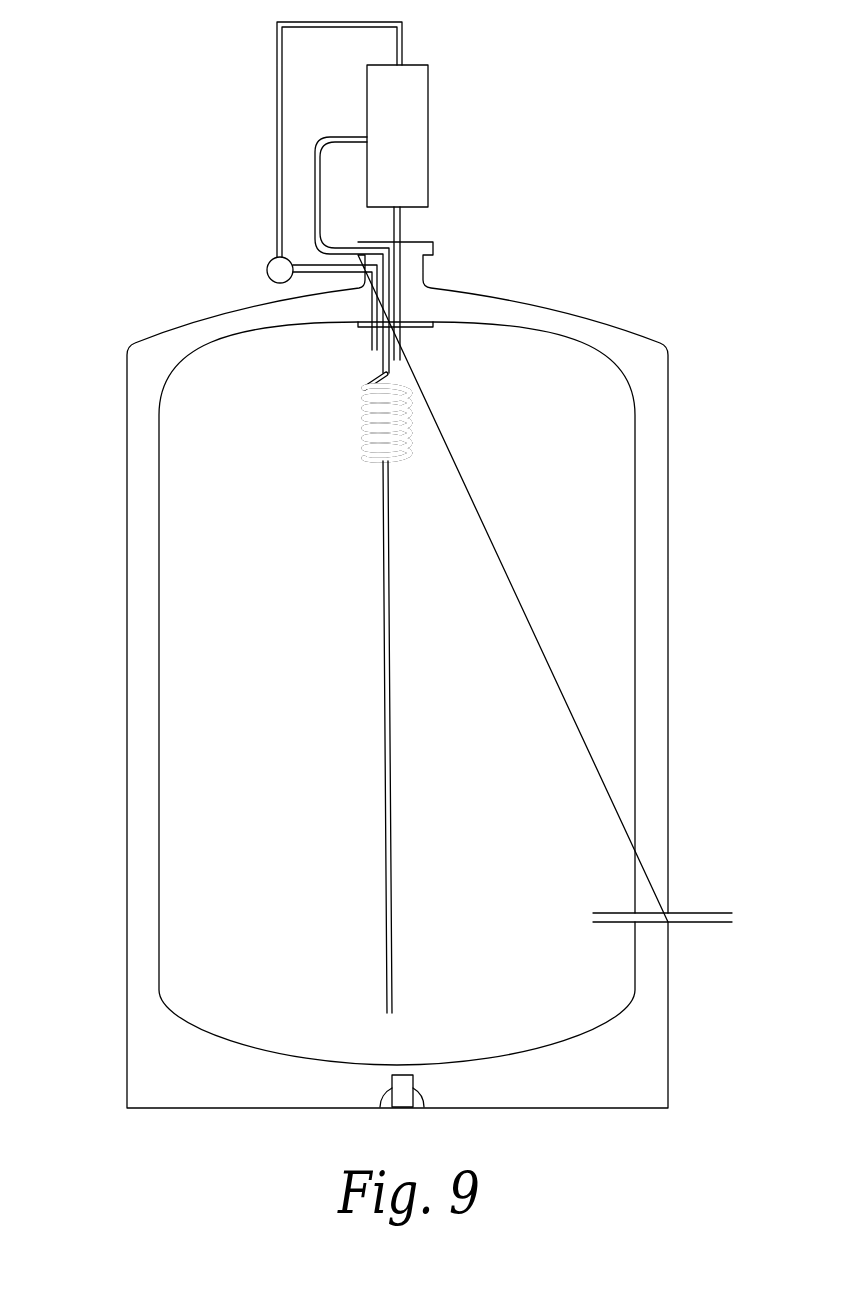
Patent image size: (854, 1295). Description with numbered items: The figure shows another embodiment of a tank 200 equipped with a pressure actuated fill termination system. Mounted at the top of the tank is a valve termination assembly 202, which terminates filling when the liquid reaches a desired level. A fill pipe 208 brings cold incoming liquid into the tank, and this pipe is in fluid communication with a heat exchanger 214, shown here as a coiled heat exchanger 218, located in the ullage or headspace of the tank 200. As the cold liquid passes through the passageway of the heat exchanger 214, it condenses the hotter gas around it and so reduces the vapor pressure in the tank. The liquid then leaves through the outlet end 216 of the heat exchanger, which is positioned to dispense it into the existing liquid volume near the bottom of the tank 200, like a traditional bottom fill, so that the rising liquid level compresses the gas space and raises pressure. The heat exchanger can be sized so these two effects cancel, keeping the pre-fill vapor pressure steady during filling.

The tank 200 is at (151, 187).
The valve termination assembly 202 is at (413, 137).
The fill pipe 208 is at (334, 186).
The heat exchanger 214 is at (437, 437).
The outlet end 216 is at (393, 1010).
The coiled heat exchanger 218 is at (410, 407).